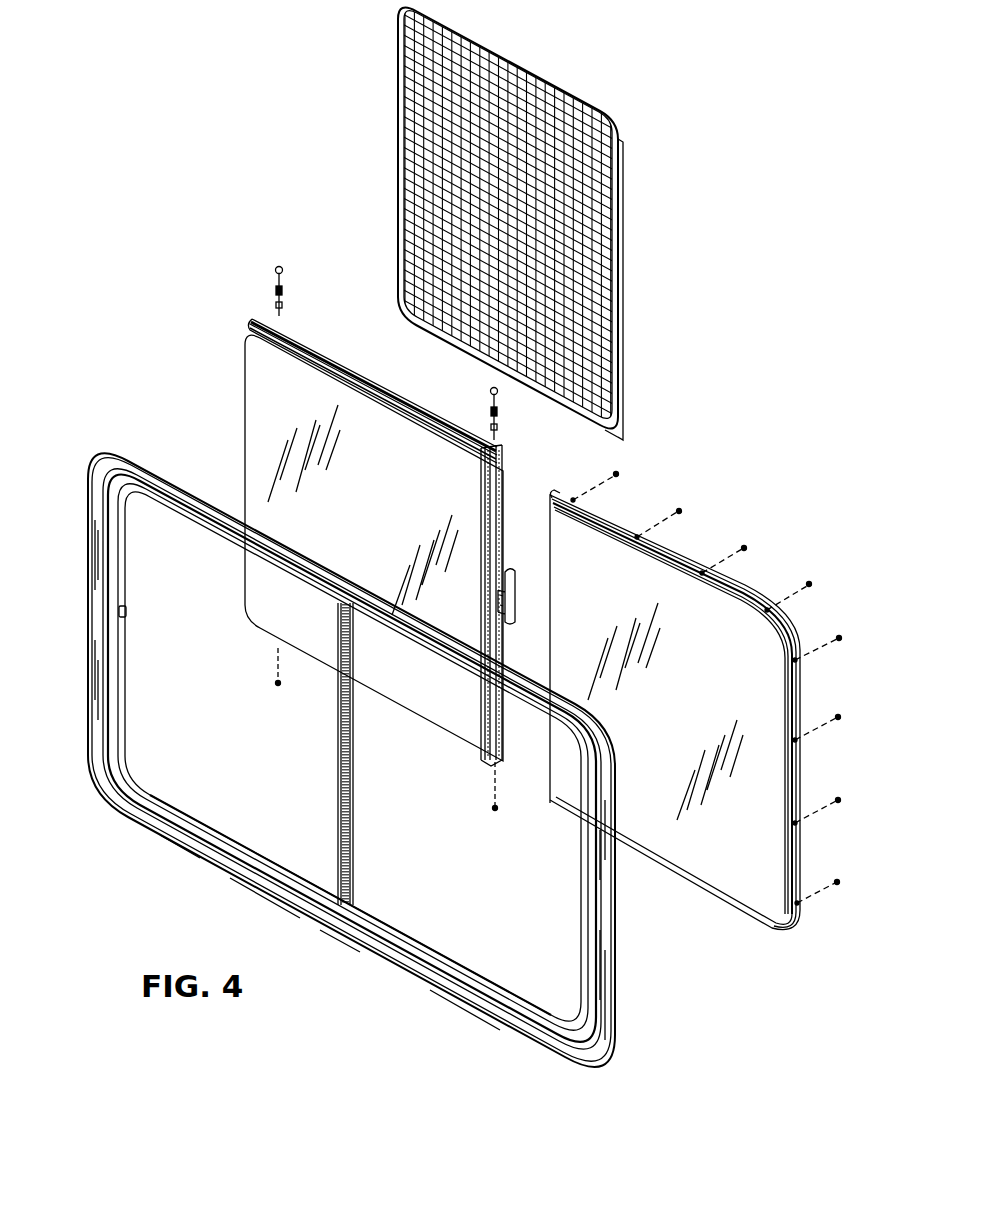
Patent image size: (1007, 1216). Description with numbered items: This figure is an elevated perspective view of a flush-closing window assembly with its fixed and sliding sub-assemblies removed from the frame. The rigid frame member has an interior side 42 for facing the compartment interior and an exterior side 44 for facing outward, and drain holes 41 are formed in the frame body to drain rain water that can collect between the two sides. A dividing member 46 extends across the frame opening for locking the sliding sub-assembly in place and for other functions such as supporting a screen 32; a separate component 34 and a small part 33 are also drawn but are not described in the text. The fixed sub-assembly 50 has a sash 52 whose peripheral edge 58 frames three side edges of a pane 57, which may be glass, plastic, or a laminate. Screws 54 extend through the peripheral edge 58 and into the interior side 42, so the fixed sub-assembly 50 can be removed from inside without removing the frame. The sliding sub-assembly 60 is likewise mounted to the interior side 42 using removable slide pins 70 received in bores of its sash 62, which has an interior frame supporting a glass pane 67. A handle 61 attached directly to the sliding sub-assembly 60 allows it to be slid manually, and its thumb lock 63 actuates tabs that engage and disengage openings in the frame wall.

The screen 32 is at (380, 61).
The screen 34 is at (600, 95).
The slide pins 70 is at (270, 272).
The sash 62 is at (320, 340).
The sliding sub-assembly 60 is at (244, 385).
The handle 61 is at (508, 562).
The thumb lock 63 is at (518, 598).
The glass pane 67 is at (382, 516).
The drain holes 41 is at (122, 462).
The exterior side 44 is at (170, 507).
The interior side 42 is at (445, 948).
The clip 33 is at (128, 612).
The dividing member 46 is at (337, 769).
The sash 52 is at (692, 565).
The fixed sub-assembly 50 is at (708, 896).
The peripheral edge 58 is at (786, 930).
The pane 57 is at (695, 714).
The screws 54 is at (620, 472).